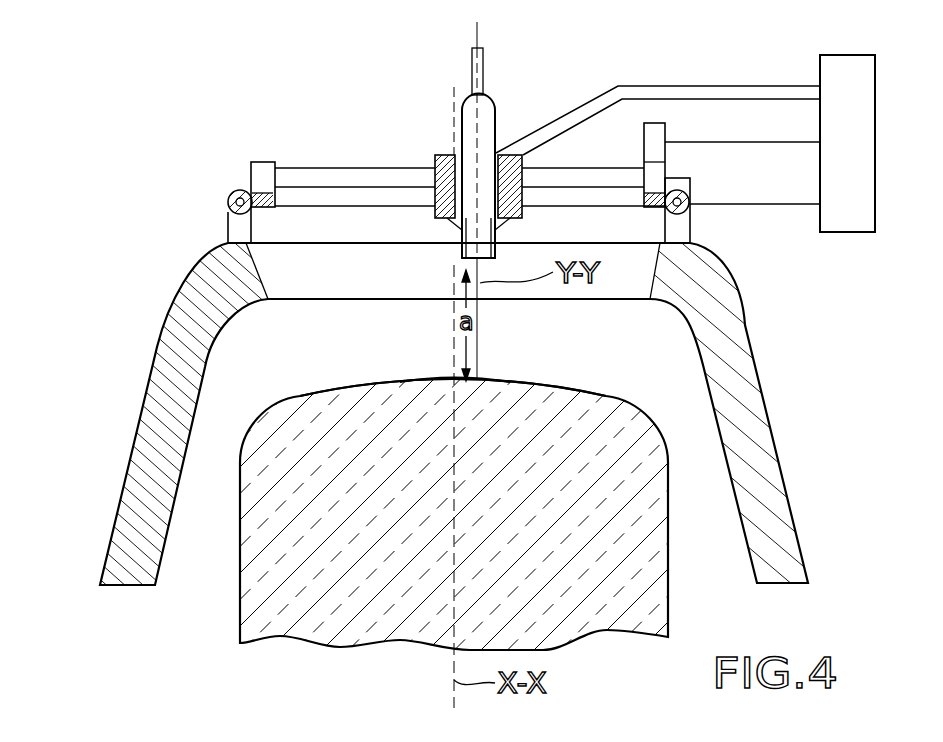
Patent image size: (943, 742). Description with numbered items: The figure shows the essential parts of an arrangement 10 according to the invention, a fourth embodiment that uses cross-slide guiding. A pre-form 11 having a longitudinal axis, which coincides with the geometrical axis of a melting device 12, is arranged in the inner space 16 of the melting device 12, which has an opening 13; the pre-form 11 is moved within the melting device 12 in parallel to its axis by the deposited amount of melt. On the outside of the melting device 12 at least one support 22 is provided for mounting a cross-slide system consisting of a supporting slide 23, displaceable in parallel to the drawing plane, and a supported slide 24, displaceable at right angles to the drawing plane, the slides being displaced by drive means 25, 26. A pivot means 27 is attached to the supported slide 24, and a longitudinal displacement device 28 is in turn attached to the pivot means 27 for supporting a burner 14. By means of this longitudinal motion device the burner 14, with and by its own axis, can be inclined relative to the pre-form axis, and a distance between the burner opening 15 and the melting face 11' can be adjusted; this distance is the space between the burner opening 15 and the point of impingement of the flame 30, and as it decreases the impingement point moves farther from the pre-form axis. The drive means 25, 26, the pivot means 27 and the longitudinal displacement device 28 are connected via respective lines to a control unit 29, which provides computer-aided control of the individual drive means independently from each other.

The arrangement 10 is at (158, 213).
The pre-form 11 is at (386, 525).
The melting face 11' is at (461, 359).
The melting device 12 is at (748, 388).
The opening 13 is at (325, 290).
The burner 14 is at (493, 100).
The burner opening 15 is at (462, 260).
The inner space 16 is at (668, 371).
The support 22 is at (250, 228).
The supporting slide 23 is at (258, 210).
The supported slide 24 is at (418, 159).
The drive means 25 is at (690, 182).
The drive means 26 is at (662, 130).
The pivot means 27 is at (502, 153).
The longitudinal displacement device 28 is at (437, 158).
The control unit 29 is at (866, 155).
The flame 30 is at (480, 380).